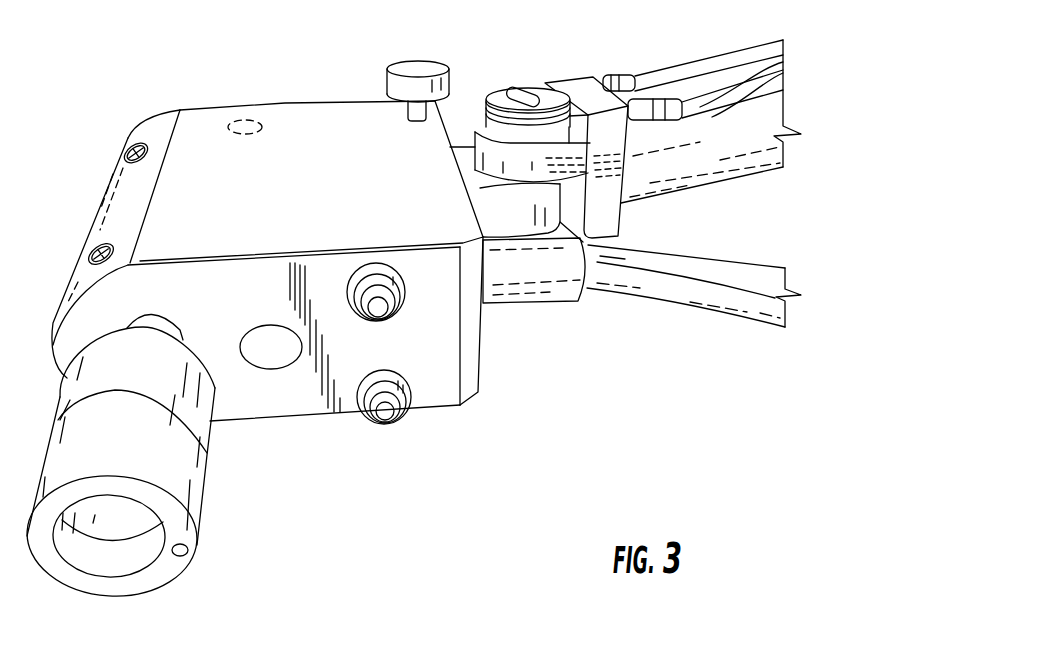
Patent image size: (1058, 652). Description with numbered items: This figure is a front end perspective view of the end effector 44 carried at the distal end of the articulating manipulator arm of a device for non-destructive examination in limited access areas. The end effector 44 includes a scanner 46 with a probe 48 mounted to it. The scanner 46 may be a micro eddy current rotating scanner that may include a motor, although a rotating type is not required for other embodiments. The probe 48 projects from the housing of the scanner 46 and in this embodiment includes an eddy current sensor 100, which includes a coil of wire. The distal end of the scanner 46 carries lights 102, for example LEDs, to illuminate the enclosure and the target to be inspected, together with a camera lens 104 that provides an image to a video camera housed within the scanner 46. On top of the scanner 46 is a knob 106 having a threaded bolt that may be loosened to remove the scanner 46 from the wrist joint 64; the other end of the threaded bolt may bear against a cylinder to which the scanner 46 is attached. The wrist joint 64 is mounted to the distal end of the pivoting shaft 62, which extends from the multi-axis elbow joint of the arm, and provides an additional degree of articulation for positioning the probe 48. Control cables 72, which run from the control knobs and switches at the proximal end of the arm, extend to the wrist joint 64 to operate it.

The end effector 44 is at (166, 108).
The scanner 46 is at (330, 122).
The probe 48 is at (193, 480).
The pivoting shaft 62 is at (690, 162).
The wrist joint 64 is at (503, 95).
The control cables 72 is at (662, 280).
The eddy current sensor 100 is at (190, 552).
The lights 102 is at (378, 313).
The camera lens 104 is at (268, 362).
The knob 106 is at (415, 66).